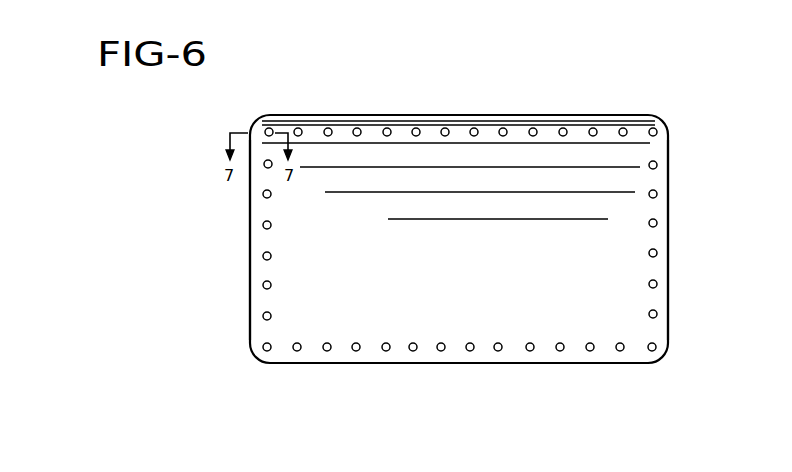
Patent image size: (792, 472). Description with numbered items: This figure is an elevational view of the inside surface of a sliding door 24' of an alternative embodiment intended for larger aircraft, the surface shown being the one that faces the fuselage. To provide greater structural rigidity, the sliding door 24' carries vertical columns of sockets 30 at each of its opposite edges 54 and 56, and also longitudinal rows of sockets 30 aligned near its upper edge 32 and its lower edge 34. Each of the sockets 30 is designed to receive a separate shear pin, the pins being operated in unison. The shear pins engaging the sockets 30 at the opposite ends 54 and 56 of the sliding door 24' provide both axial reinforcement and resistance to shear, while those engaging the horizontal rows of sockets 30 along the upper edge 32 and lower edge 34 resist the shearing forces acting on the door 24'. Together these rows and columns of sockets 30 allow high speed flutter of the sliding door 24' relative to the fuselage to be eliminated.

The sliding door 24' is at (470, 209).
The sockets 30 is at (328, 128).
The upper edge 32 is at (422, 114).
The lower edge 34 is at (430, 364).
The opposite edge 54 is at (670, 213).
The opposite edge 56 is at (248, 241).